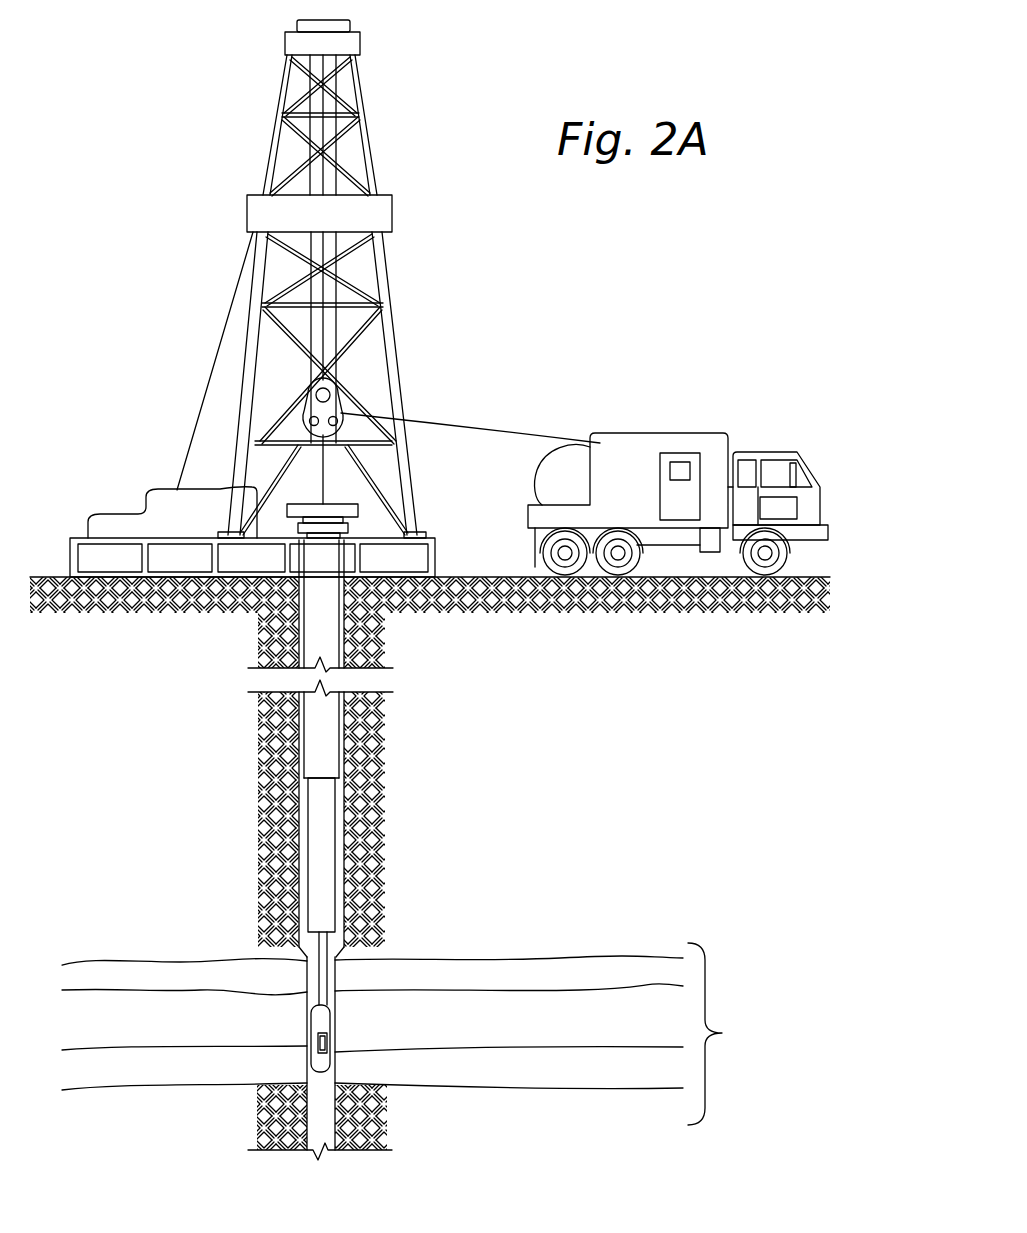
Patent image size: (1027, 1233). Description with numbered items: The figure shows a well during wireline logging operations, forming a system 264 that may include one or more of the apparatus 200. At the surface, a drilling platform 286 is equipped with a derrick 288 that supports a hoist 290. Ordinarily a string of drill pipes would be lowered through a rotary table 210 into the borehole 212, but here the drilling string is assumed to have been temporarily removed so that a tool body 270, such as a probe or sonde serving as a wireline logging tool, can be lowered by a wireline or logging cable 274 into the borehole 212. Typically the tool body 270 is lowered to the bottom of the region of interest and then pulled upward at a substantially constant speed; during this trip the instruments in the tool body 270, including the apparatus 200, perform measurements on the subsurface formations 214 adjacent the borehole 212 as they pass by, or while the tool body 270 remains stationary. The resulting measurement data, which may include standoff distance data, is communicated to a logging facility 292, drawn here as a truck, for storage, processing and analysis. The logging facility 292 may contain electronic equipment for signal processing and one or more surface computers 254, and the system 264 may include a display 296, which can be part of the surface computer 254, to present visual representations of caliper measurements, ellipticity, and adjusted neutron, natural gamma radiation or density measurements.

The system 264 is at (540, 289).
The hoist 290 is at (340, 400).
The wireline or logging cable 274 is at (507, 437).
The logging facility 292 is at (640, 432).
The display 296 is at (668, 470).
The surface computer 254 is at (660, 500).
The rotary table 210 is at (360, 509).
The derrick 288 is at (422, 522).
The drilling platform 286 is at (437, 553).
The borehole 212 is at (305, 978).
The tool body 270 is at (330, 1016).
The apparatus 200 is at (327, 1043).
The subsurface formations 214 is at (417, 1034).